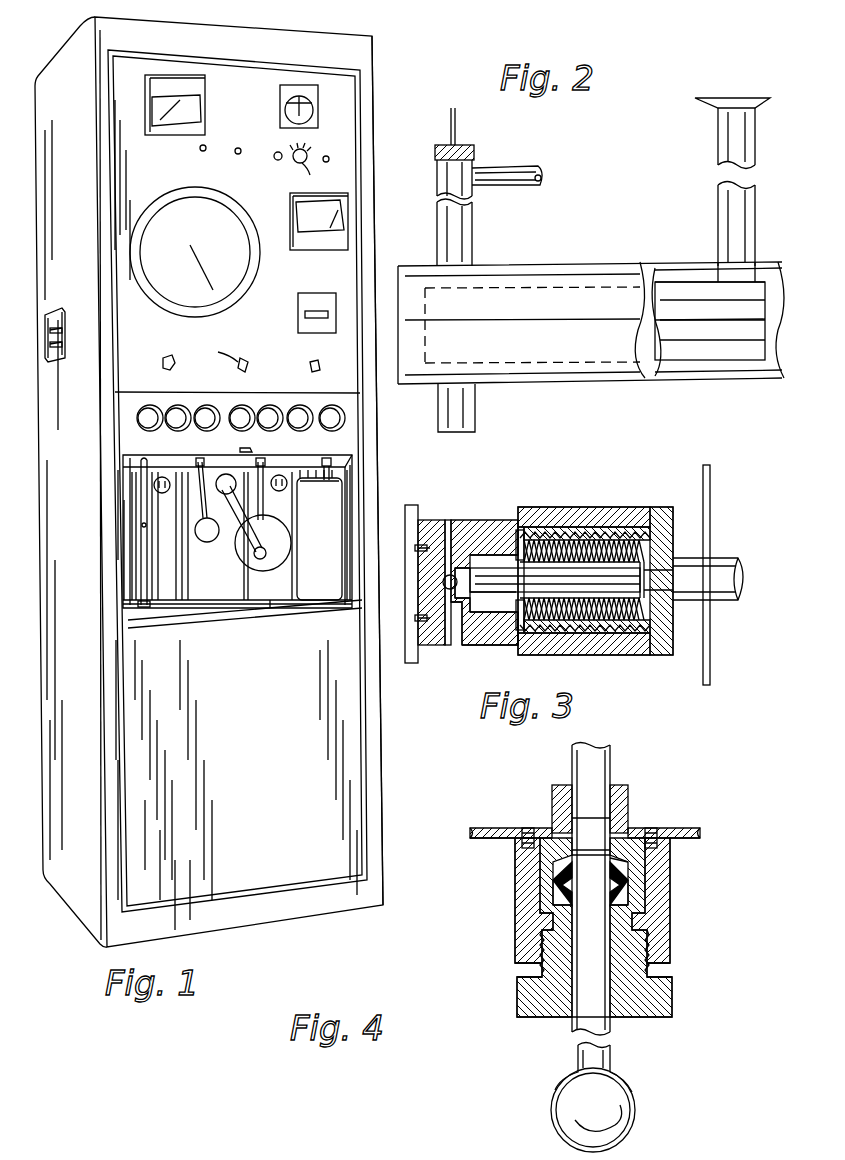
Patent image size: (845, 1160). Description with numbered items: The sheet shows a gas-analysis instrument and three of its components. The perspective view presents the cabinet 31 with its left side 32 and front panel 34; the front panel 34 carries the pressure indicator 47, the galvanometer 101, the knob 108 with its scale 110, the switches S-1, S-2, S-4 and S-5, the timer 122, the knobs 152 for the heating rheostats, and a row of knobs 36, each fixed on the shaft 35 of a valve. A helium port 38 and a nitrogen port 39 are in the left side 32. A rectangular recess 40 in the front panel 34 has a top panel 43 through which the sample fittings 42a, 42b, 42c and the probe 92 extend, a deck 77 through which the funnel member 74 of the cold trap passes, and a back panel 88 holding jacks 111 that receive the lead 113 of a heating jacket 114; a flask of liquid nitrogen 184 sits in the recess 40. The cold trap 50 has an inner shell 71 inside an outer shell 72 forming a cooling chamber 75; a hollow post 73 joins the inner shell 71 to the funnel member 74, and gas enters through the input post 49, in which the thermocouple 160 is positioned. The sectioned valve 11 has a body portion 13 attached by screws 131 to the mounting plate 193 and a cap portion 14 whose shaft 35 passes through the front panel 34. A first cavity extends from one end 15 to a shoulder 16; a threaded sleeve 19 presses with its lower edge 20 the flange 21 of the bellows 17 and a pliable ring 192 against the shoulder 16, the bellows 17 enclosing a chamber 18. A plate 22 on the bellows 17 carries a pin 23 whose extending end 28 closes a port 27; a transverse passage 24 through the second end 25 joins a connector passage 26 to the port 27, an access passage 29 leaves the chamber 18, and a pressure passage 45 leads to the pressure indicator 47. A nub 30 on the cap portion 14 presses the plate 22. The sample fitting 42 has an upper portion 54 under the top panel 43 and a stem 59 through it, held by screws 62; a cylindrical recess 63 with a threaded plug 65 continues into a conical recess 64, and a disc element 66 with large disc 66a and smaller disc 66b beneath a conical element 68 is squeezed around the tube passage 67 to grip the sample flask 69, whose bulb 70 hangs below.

In FIG. 1, the cabinet 31 is at (380, 65).
In FIG. 1, the left side 32 is at (48, 440).
In FIG. 1, the knob 36 is at (165, 410).
In FIG. 1, the helium port 38 is at (57, 356).
In FIG. 1, the nitrogen port 39 is at (58, 318).
In FIG. 1, the rectangular recess 40 is at (273, 597).
In FIG. 1, the top panel 43 is at (156, 460).
In FIG. 4, the top panel 43 is at (700, 828).
In FIG. 1, the sample fitting 42a is at (200, 460).
In FIG. 1, the second sample fitting 42b is at (262, 460).
In FIG. 1, the third sample fitting 42c is at (328, 462).
In FIG. 1, the pressure indicator 47 is at (165, 216).
In FIG. 1, the funnel member 74 is at (143, 605).
In FIG. 2, the funnel member 74 is at (735, 108).
In FIG. 1, the deck 77 is at (242, 608).
In FIG. 1, the back panel 88 is at (196, 600).
In FIG. 1, the probe 92 is at (148, 532).
In FIG. 1, the galvanometer 101 is at (288, 105).
In FIG. 1, the knob 108 is at (305, 170).
In FIG. 1, the scale 110 is at (295, 147).
In FIG. 1, the jacks 111 is at (175, 485).
In FIG. 1, the lead 113 is at (213, 542).
In FIG. 1, the heating jacket 114 is at (266, 570).
In FIG. 1, the timer 122 is at (326, 297).
In FIG. 1, the knob 152 is at (178, 360).
In FIG. 1, the flask of liquid nitrogen 184 is at (308, 600).
In FIG. 1, the switch S-1 is at (278, 160).
In FIG. 1, the switch S-2 is at (325, 157).
In FIG. 1, the switch S-4 is at (200, 150).
In FIG. 1, the switch S-5 is at (240, 153).
In FIG. 2, the input post 49 is at (540, 178).
In FIG. 2, the cold trap 50 is at (555, 265).
In FIG. 2, the inner shell 71 is at (650, 343).
In FIG. 2, the outer shell 72 is at (680, 390).
In FIG. 2, the hollow post 73 is at (712, 282).
In FIG. 2, the cooling chamber 75 is at (678, 272).
In FIG. 2, the thermocouple 160 is at (468, 172).
In FIG. 3, the valve 11 is at (495, 642).
In FIG. 3, the body portion 13 is at (486, 520).
In FIG. 3, the cap portion 14 is at (660, 508).
In FIG. 3, the one end 15 is at (606, 512).
In FIG. 3, the shoulder 16 is at (518, 518).
In FIG. 3, the bellows 17 is at (588, 648).
In FIG. 3, the chamber 18 is at (516, 612).
In FIG. 3, the threaded sleeve 19 is at (562, 522).
In FIG. 3, the lower edge 20 is at (530, 648).
In FIG. 3, the flange 21 is at (540, 520).
In FIG. 3, the plate 22 is at (668, 586).
In FIG. 3, the pin 23 is at (518, 560).
In FIG. 3, the transverse passage 24 is at (443, 580).
In FIG. 3, the second end 25 is at (430, 520).
In FIG. 3, the connector passage 26 is at (455, 595).
In FIG. 3, the port 27 is at (516, 592).
In FIG. 3, the extending end 28 is at (500, 566).
In FIG. 3, the access passage 29 is at (455, 645).
In FIG. 3, the nub 30 is at (665, 578).
In FIG. 3, the front panel 34 is at (712, 645).
In FIG. 3, the shaft 35 is at (724, 566).
In FIG. 3, the pressure passage 45 is at (428, 522).
In FIG. 3, the screws 131 is at (410, 625).
In FIG. 3, the pliable ring 192 is at (512, 640).
In FIG. 3, the mounting plate 193 is at (418, 505).
In FIG. 4, the sample fitting 42 is at (682, 893).
In FIG. 4, the upper portion 54 is at (670, 880).
In FIG. 4, the stem 59 is at (628, 800).
In FIG. 4, the screws 62 is at (530, 828).
In FIG. 4, the cylindrical recess 63 is at (668, 908).
In FIG. 4, the conical recess 64 is at (618, 876).
In FIG. 4, the threaded plug 65 is at (652, 955).
In FIG. 4, the disc element 66 is at (612, 904).
In FIG. 4, the large disc 66a is at (558, 893).
In FIG. 4, the smaller disc 66b is at (562, 876).
In FIG. 4, the tube passage 67 is at (591, 834).
In FIG. 4, the conical element 68 is at (608, 889).
In FIG. 4, the sample flask 69 is at (568, 1028).
In FIG. 4, the bulb 70 is at (632, 1098).